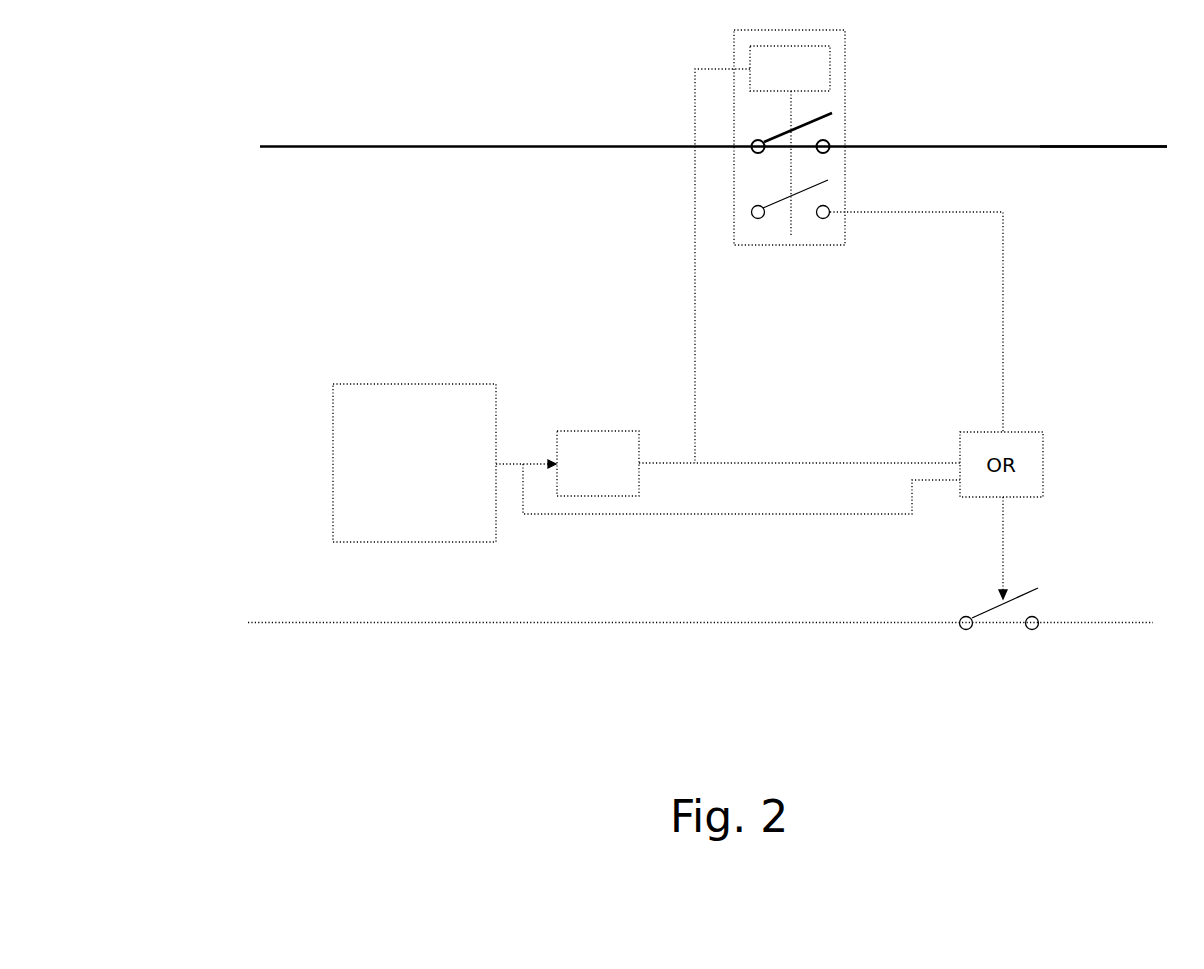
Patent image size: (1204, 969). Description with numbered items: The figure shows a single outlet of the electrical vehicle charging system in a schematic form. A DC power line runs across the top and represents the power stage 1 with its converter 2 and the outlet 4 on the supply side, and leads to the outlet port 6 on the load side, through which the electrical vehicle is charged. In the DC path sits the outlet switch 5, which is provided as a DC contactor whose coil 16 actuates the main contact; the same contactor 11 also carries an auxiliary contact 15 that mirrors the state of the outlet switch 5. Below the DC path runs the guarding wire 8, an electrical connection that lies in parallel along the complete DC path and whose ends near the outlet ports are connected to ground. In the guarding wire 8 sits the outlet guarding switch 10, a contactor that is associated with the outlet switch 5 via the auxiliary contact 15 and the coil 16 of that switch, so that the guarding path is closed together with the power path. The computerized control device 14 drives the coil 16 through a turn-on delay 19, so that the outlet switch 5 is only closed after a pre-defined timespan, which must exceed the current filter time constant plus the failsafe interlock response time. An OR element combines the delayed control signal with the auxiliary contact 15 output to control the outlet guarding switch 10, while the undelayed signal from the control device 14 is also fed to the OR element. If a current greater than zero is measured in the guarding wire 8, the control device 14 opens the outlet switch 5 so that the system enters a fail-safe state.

The power stage 1 is at (713, 193).
The converter 2 is at (713, 193).
The outlet 4 is at (387, 147).
The outlet switch 5 is at (832, 115).
The outlet port 6 is at (1104, 147).
The guarding wire 8 is at (549, 623).
The outlet guarding switch 10 is at (980, 605).
The current sensor 11 is at (849, 231).
The control device 14 is at (328, 425).
The auxiliary contact 15 is at (830, 182).
The coil 16 is at (833, 77).
The turn-on delay 19 is at (568, 438).